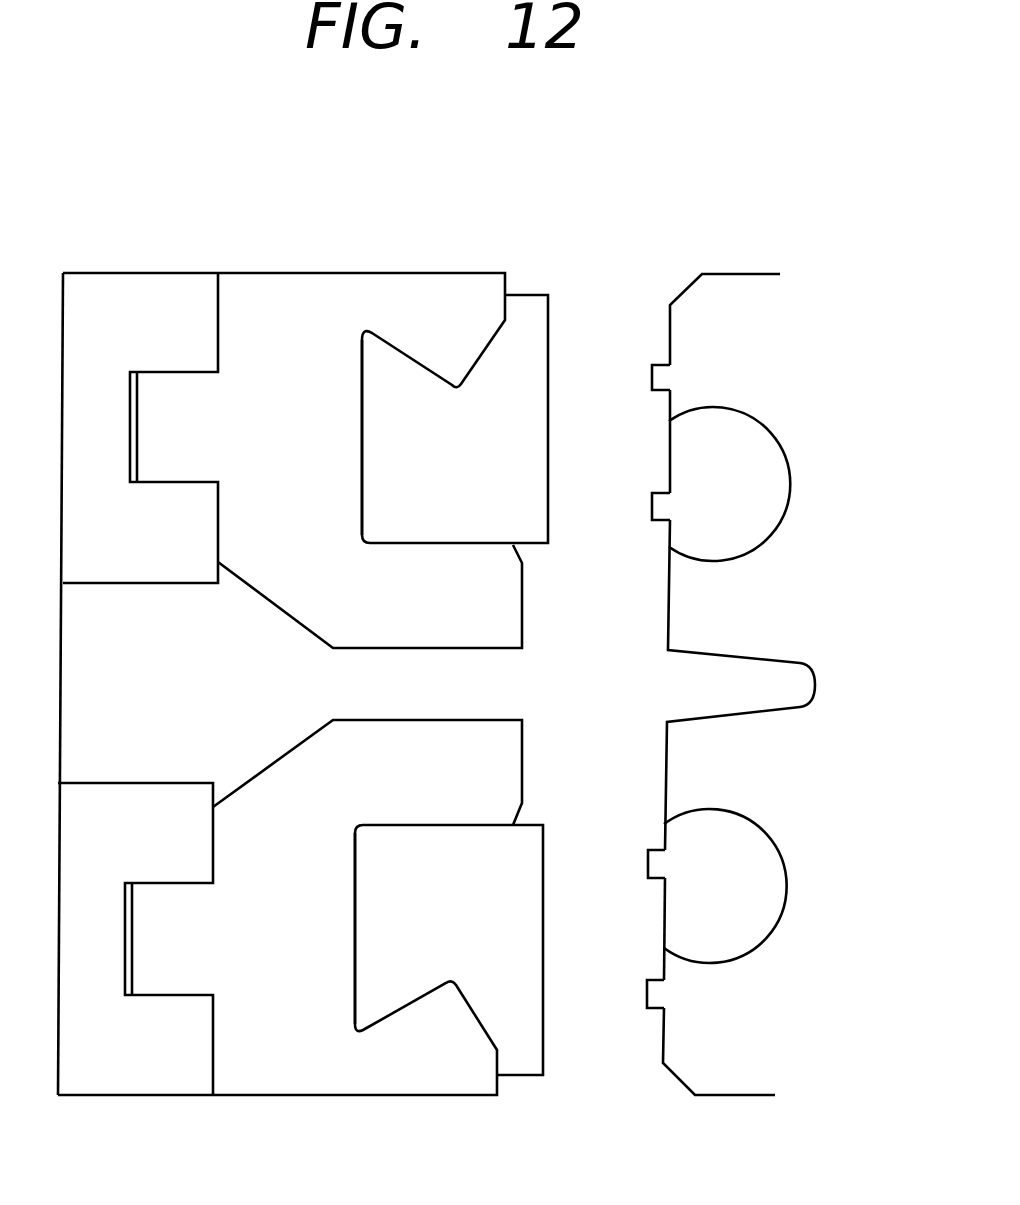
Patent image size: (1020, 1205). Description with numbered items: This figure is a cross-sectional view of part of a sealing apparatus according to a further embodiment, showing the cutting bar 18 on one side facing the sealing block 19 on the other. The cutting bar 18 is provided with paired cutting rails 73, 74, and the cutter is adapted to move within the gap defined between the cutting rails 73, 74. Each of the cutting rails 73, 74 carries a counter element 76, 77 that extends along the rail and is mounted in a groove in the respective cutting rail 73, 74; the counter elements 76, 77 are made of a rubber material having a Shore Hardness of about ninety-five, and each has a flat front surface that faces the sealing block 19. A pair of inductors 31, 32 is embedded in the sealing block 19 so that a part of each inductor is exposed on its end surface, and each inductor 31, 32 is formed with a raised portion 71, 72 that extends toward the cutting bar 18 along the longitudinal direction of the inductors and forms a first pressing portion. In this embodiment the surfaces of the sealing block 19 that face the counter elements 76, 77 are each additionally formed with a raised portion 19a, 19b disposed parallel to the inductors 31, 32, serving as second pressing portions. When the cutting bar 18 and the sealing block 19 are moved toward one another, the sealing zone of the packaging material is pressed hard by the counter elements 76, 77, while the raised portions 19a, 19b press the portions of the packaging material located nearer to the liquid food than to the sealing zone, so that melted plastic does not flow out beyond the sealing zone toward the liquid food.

The cutting bar 18 is at (375, 655).
The sealing block 19 is at (761, 649).
The raised portion 19a is at (665, 372).
The raised portion 19b is at (665, 997).
The inductor 31 is at (772, 468).
The inductor 32 is at (768, 903).
The raised portion 71 is at (665, 505).
The raised portion 72 is at (660, 862).
The cutting rail 73 is at (272, 290).
The cutting rail 74 is at (285, 1070).
The counter element 76 is at (527, 315).
The counter element 77 is at (515, 1058).